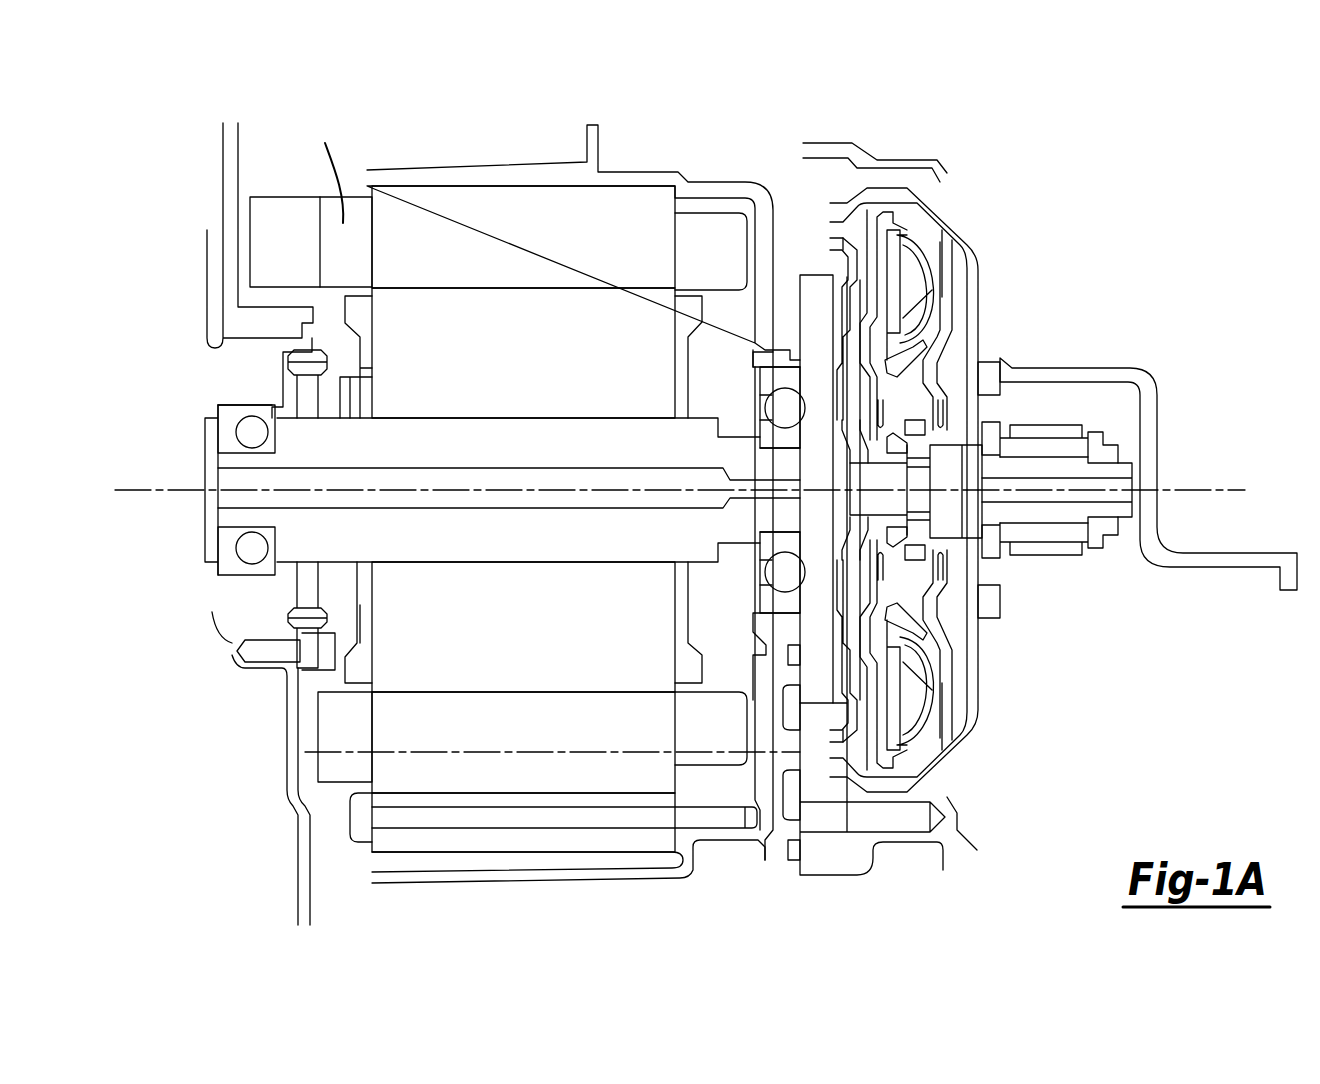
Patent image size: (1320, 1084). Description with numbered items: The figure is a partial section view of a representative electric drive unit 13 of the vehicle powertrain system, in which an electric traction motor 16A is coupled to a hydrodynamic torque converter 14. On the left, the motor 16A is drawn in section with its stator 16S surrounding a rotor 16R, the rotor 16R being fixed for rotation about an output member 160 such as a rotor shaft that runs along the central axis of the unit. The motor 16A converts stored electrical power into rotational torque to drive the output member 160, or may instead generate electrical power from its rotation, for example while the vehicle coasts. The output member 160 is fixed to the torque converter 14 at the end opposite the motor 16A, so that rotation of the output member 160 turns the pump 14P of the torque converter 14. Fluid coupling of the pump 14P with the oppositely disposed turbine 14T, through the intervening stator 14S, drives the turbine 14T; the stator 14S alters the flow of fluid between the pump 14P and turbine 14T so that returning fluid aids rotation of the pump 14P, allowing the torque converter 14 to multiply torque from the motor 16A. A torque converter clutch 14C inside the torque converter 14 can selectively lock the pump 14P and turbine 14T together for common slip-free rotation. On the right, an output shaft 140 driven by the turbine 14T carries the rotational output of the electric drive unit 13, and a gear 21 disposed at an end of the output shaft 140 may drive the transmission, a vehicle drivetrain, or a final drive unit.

The electric drive unit 13 is at (1095, 122).
The hydrodynamic torque converter 14 is at (972, 210).
The pump 14P is at (950, 273).
The stator 14S is at (937, 327).
The turbine 14T is at (932, 548).
The torque converter clutch 14C is at (870, 767).
The output shaft 140 is at (1065, 473).
The gear 21 is at (1068, 550).
The electric traction motor 16A is at (178, 158).
The stator of the electric traction motor 16S is at (523, 489).
The rotor 16R is at (521, 490).
The output member 160 is at (392, 540).